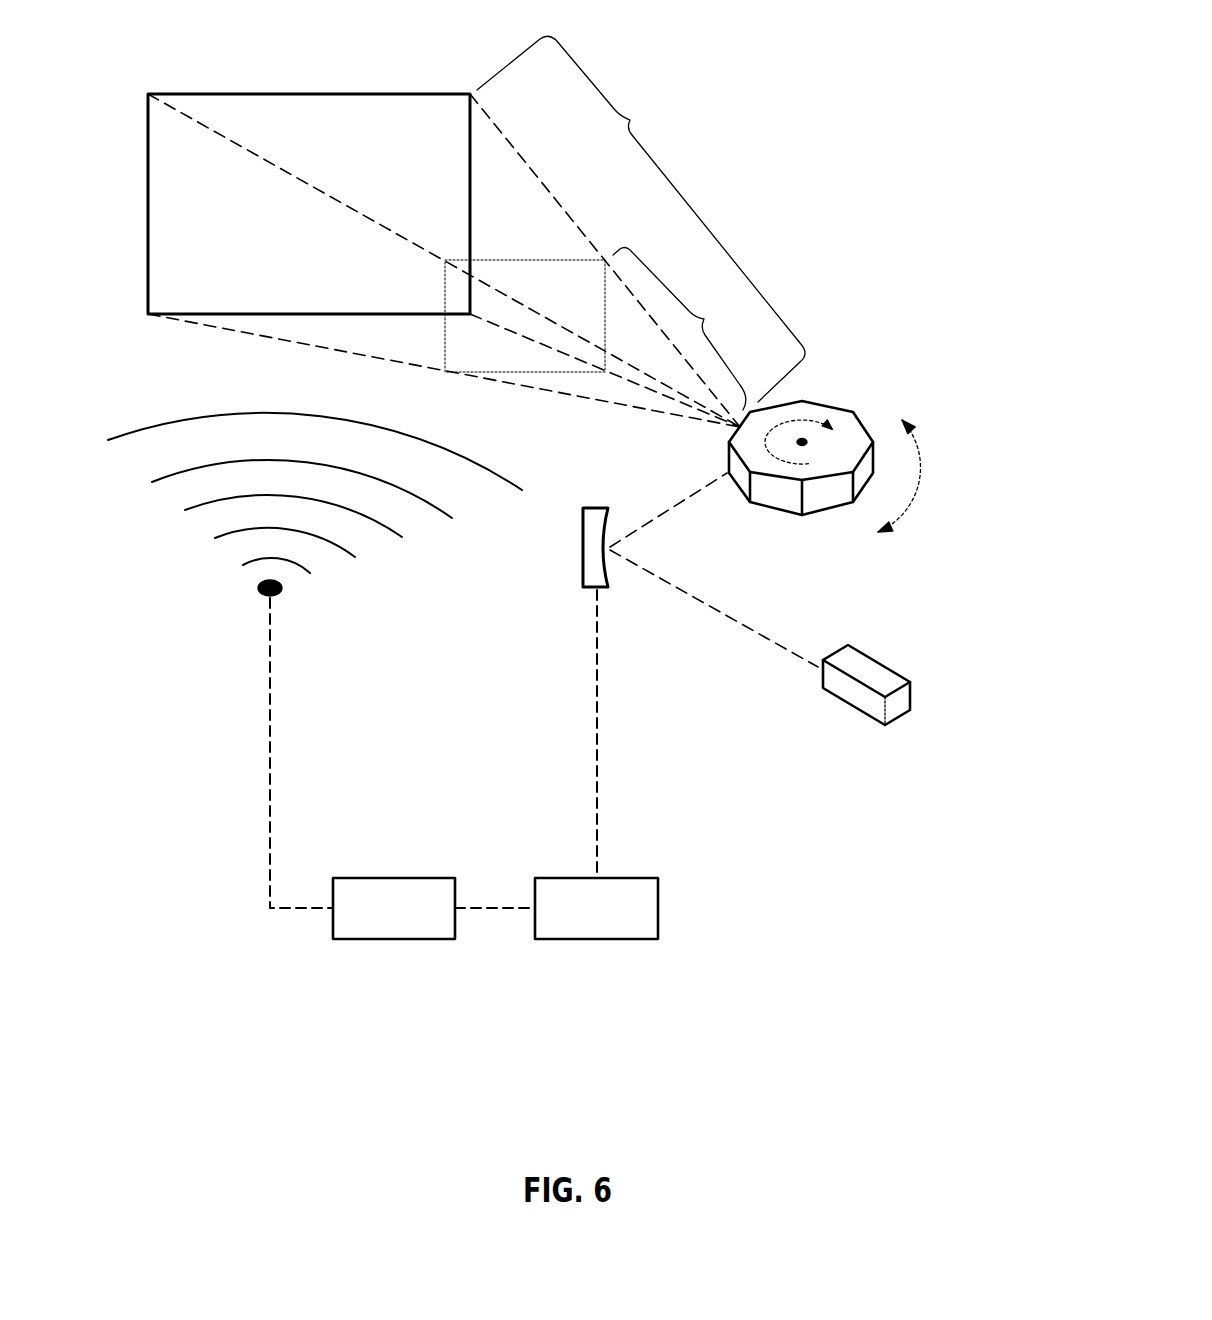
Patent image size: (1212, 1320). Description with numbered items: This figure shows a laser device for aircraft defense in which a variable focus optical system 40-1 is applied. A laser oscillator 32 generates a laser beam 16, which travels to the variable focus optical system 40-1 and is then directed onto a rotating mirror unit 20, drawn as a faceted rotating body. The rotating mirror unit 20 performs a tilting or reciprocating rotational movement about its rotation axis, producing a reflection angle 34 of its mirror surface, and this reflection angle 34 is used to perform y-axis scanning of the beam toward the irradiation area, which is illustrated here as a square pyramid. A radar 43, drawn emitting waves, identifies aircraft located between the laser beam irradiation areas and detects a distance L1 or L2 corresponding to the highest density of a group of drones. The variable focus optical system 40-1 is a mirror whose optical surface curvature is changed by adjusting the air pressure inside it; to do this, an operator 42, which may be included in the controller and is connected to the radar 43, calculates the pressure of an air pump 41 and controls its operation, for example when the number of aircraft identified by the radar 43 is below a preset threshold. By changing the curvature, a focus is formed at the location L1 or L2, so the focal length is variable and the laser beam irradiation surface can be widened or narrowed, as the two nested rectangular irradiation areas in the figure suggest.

The distance L1 is at (641, 219).
The distance L2 is at (679, 329).
The rotating mirror unit 20 is at (852, 428).
The reflection angle 34 is at (918, 495).
The laser oscillator 32 is at (910, 697).
The laser beam 16 is at (737, 625).
The variable focus optical system 40-1 is at (580, 548).
The radar 43 is at (263, 596).
The operator 42 is at (395, 939).
The air pump 41 is at (597, 939).